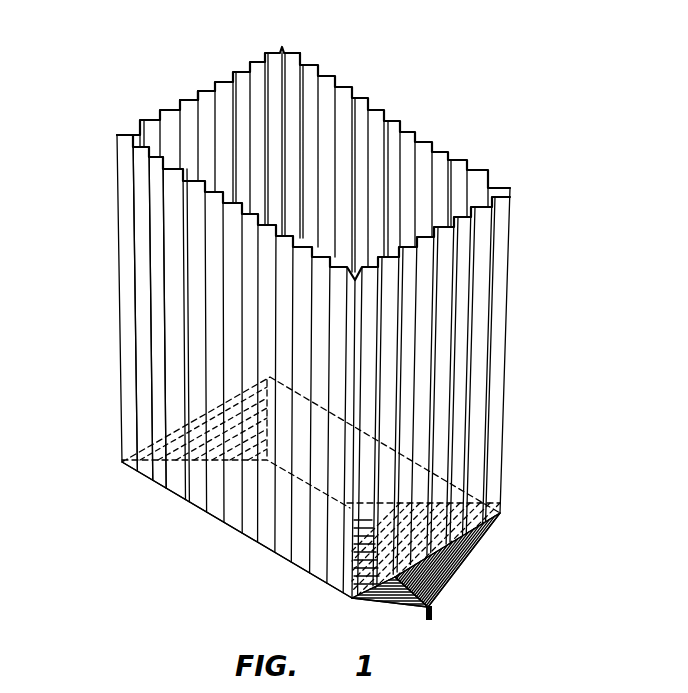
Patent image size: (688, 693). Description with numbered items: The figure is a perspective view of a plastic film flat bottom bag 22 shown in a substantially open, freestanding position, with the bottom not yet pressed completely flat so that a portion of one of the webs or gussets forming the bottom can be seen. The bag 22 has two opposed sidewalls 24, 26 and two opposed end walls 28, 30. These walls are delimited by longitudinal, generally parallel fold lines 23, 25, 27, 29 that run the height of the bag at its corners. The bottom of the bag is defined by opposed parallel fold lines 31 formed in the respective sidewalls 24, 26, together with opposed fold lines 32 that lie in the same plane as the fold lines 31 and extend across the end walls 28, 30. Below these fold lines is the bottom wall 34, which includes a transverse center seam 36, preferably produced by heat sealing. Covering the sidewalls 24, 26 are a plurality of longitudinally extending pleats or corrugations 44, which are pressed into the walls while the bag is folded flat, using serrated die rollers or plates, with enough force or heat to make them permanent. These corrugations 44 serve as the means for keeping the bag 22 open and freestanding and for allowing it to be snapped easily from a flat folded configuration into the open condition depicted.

The plastic bag 22 is at (522, 263).
The longitudinal fold line 23 is at (118, 275).
The sidewall 24 is at (138, 343).
The longitudinal fold line 25 is at (353, 467).
The sidewall 26 is at (390, 112).
The longitudinal fold line 27 is at (502, 407).
The end wall 28 is at (445, 360).
The longitudinal fold line 29 is at (282, 48).
The end wall 30 is at (201, 89).
The bottom fold line 31 is at (270, 549).
The bottom fold line 32 is at (128, 442).
The bottom wall 34 is at (388, 600).
The transverse center seam 36 is at (433, 615).
The pleats or corrugations 44 is at (238, 64).